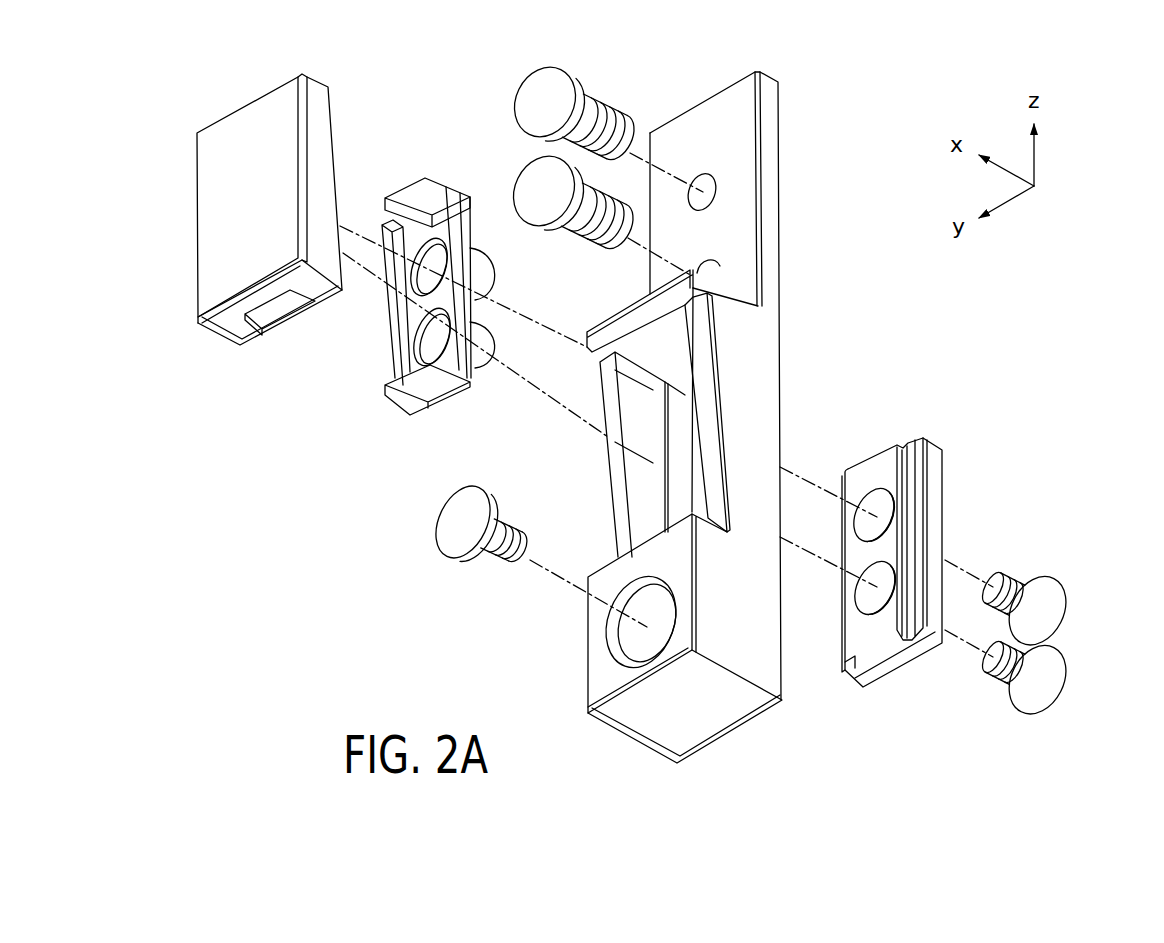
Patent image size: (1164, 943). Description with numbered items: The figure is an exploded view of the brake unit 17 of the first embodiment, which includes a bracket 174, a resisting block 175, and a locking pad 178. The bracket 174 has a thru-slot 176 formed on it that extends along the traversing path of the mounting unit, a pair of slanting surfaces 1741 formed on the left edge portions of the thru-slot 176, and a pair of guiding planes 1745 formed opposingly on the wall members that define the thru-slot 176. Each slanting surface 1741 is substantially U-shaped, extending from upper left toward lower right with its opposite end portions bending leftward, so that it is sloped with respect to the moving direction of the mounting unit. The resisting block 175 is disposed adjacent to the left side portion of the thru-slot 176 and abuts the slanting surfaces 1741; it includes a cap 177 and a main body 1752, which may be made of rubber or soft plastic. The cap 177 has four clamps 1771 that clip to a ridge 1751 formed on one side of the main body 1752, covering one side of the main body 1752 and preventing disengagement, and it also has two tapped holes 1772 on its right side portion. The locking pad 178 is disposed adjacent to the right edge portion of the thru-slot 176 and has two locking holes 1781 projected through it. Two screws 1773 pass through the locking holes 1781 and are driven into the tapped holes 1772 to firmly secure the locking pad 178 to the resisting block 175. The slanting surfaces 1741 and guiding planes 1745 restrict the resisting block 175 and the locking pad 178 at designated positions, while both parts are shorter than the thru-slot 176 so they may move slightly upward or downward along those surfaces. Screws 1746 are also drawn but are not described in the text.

The brake unit 17 is at (312, 531).
The bracket 174 is at (765, 663).
The slanting surfaces 1741 is at (612, 398).
The guiding planes 1745 is at (670, 456).
The screws 1746 is at (572, 88).
The resisting block 175 is at (455, 108).
The ridge 1751 is at (278, 325).
The main body 1752 is at (262, 108).
The thru-slot 176 is at (653, 422).
The cap 177 is at (493, 137).
The clamps 1771 is at (402, 194).
The tapped holes 1772 is at (486, 246).
The screws 1773 is at (1063, 587).
The locking pad 178 is at (937, 482).
The locking holes 1781 is at (874, 507).